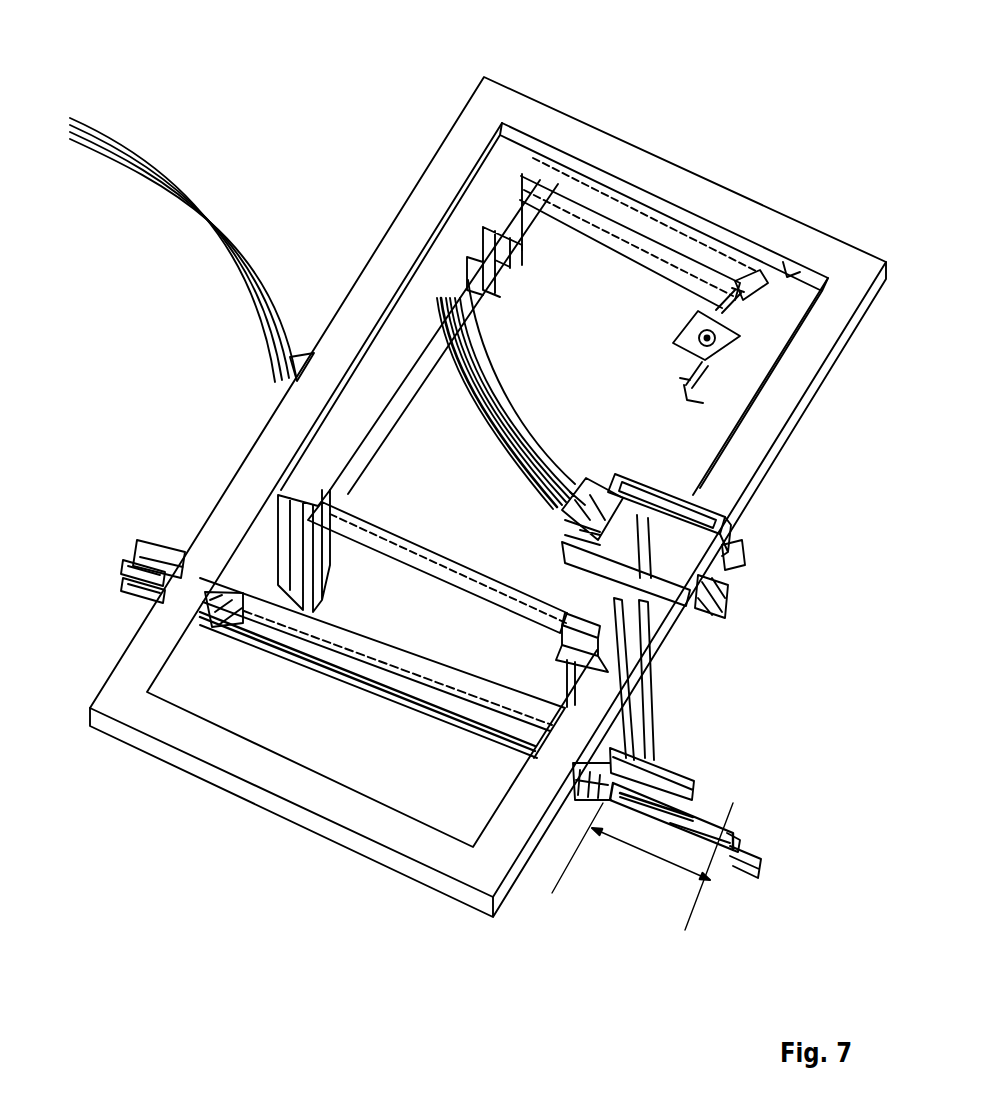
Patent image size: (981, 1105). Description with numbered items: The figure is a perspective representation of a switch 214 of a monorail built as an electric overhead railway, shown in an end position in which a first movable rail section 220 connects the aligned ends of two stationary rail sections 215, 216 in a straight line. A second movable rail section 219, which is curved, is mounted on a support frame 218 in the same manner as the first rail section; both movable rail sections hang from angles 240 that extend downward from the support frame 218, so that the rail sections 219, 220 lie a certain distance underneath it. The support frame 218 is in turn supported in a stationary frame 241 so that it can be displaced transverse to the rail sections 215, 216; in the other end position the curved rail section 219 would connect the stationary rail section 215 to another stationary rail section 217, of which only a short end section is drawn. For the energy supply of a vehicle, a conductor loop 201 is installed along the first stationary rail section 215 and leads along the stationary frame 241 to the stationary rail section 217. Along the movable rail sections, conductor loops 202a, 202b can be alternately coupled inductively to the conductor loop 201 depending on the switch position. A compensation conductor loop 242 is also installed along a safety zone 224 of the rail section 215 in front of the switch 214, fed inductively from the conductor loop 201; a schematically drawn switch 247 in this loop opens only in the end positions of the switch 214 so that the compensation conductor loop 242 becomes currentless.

The switch 214 is at (340, 128).
The conductor loop 201 is at (200, 232).
The stationary rail section 217 is at (293, 353).
The angles 240 is at (523, 248).
The second movable rail section 219 is at (507, 417).
The stationary rail section 216 is at (158, 538).
The support frame 218 is at (363, 420).
The conductor loop 202b is at (498, 458).
The first movable rail section 220 is at (417, 670).
The conductor loop 202a is at (353, 683).
The stationary frame 241 is at (347, 818).
The switch 247 is at (673, 627).
The first stationary rail section 215 is at (667, 783).
The compensation conductor loop 242 is at (713, 817).
The safety zone 224 is at (647, 857).